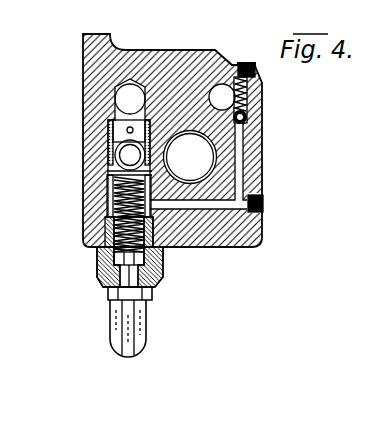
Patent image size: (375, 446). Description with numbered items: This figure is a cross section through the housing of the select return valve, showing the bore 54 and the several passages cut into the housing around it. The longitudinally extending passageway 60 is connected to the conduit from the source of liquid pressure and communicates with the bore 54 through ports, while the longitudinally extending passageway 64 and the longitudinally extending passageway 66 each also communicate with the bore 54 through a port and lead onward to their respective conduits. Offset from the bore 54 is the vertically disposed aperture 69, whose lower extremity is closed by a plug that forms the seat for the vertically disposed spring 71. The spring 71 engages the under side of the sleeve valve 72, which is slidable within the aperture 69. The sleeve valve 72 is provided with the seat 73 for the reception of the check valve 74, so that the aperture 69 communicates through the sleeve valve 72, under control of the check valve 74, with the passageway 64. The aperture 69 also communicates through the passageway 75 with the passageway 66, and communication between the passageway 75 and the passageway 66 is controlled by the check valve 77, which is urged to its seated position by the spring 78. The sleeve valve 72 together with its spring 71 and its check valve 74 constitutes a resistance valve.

The bore 54 is at (214, 152).
The longitudinally extending passageway 60 is at (97, 205).
The longitudinally extending passageway 64 is at (131, 84).
The longitudinally extending passageway 66 is at (221, 85).
The aperture 69 is at (116, 190).
The spring 71 is at (106, 228).
The sleeve valve 72 is at (110, 127).
The seat 73 is at (109, 173).
The check valve 74 is at (113, 153).
The passageway 75 is at (244, 163).
The check valve 77 is at (263, 117).
The spring 78 is at (256, 86).